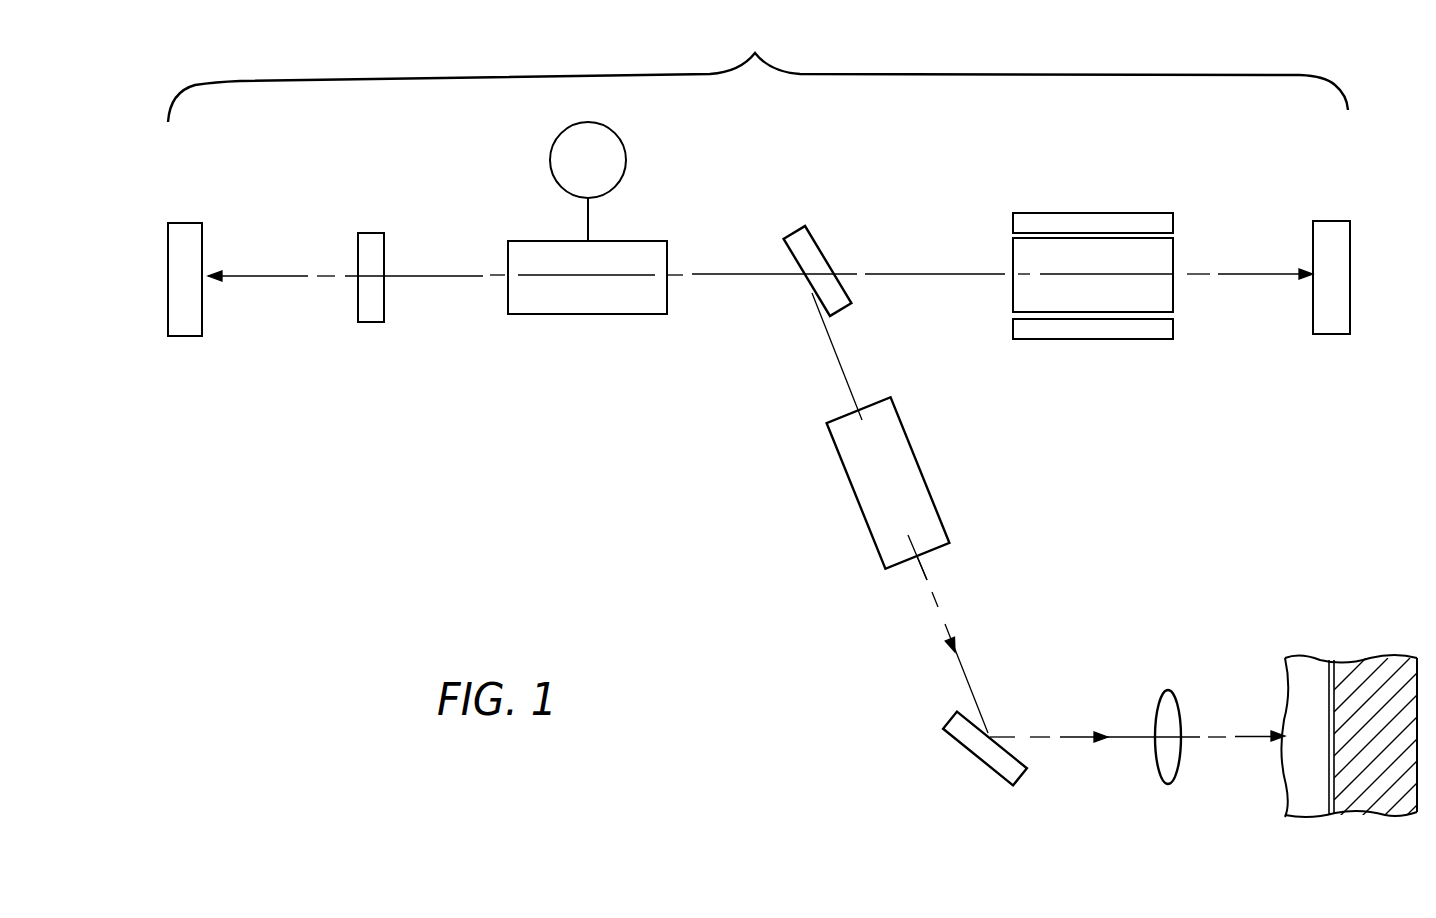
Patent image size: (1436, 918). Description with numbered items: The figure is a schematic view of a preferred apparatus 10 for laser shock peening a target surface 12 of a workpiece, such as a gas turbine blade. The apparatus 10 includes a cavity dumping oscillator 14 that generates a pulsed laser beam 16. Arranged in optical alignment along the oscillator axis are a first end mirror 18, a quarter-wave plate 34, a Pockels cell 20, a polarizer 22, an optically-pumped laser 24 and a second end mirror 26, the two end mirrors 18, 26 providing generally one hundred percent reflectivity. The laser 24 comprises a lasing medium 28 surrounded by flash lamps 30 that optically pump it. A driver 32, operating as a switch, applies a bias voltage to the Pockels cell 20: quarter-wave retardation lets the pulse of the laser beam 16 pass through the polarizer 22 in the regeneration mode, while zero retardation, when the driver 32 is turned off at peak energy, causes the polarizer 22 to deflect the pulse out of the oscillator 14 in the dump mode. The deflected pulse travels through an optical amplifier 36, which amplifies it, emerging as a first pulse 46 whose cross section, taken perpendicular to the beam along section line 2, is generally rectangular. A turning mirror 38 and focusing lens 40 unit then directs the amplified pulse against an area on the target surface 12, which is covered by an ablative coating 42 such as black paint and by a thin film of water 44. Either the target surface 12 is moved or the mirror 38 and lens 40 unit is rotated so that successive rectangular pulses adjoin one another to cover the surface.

The section line 2- 2 is at (928, 664).
The apparatus 10 is at (1185, 542).
The target surface 12 is at (1358, 734).
The cavity dumping oscillator 14 is at (758, 68).
The laser beam 16 is at (270, 276).
The first end mirror 18 is at (168, 305).
The Pockels cell 20 is at (520, 314).
The polarizer 22 is at (845, 307).
The optically-pumped laser 24 is at (968, 236).
The second end mirror 26 is at (1313, 238).
The lasing medium 28 is at (1173, 263).
The flash lamps 30 is at (1080, 213).
The driver 32 is at (549, 157).
The quarter-wave plate 34 is at (383, 253).
The optical amplifier 36 is at (907, 423).
The turning mirror 38 is at (980, 765).
The focusing lens 40 is at (1180, 705).
The ablative coating 42 is at (1332, 673).
The thin film of water 44 is at (1293, 660).
The first pulse 46 is at (921, 570).